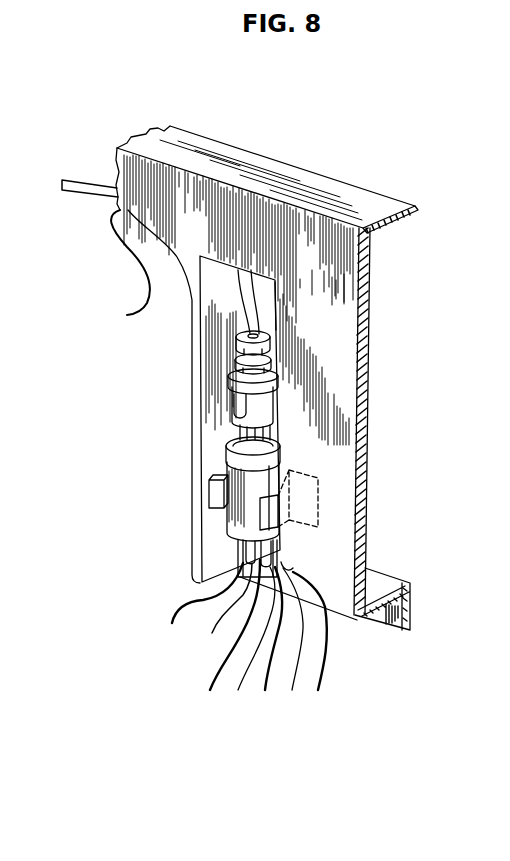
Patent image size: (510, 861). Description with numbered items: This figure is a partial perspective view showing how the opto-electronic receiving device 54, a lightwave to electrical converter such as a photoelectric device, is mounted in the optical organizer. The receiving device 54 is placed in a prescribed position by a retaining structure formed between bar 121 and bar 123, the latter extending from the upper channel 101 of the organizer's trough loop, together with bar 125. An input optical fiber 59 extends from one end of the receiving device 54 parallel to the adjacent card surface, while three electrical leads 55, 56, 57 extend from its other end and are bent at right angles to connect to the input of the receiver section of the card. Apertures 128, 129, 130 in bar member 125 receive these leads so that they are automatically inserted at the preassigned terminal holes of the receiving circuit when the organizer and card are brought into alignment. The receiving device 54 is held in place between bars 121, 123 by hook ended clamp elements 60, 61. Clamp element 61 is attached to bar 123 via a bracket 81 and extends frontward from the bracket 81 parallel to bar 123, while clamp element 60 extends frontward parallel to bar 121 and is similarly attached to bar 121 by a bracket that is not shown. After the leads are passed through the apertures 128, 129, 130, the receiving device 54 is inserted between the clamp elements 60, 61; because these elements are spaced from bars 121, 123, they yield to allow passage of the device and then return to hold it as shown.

The upper channel 101 is at (112, 170).
The input optical fiber 59 is at (238, 303).
The bar 121 is at (210, 360).
The bar 123 is at (273, 303).
The lightwave to electrical converter 54 is at (200, 470).
The clamp element 60 is at (248, 517).
The clamp element 61 is at (207, 507).
The bracket 81 is at (300, 470).
The bar member 125 is at (196, 606).
The electrical lead 55 is at (225, 610).
The electrical lead 56 is at (251, 634).
The electrical lead 57 is at (295, 634).
The aperture 128 is at (210, 690).
The aperture 129 is at (265, 690).
The aperture 130 is at (318, 690).